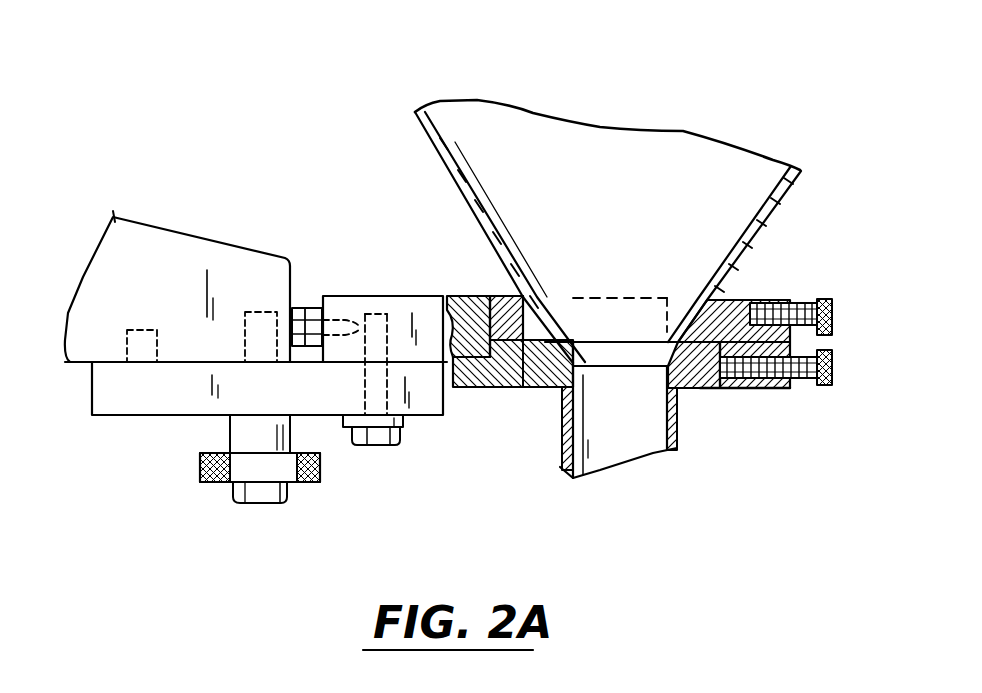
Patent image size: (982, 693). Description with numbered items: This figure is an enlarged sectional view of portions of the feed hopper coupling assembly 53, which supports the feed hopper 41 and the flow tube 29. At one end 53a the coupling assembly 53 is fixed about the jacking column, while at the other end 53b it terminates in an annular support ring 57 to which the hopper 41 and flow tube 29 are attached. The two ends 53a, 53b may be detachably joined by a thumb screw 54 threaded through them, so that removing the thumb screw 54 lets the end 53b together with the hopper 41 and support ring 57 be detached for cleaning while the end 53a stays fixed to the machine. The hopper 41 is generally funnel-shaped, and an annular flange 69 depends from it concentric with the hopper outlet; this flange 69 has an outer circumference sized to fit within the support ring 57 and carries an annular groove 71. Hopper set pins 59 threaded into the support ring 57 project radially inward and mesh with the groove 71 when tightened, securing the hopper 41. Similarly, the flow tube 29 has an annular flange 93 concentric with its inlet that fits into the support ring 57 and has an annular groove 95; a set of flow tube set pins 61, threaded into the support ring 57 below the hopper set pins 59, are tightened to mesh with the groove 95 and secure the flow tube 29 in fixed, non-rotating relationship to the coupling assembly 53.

The feed hopper coupling assembly 53 is at (305, 160).
The end 53a is at (268, 203).
The end 53b is at (400, 252).
The thumb screw 54 is at (200, 467).
The annular support ring 57 is at (493, 380).
The feed hopper 41 is at (768, 215).
The flow tube 29 is at (636, 446).
The annular flange 69 is at (733, 302).
The annular groove 71 is at (777, 303).
The hopper set pins 59 is at (835, 316).
The flow tube set pins 61 is at (835, 368).
The annular flange 93 is at (692, 383).
The annular groove 95 is at (713, 390).